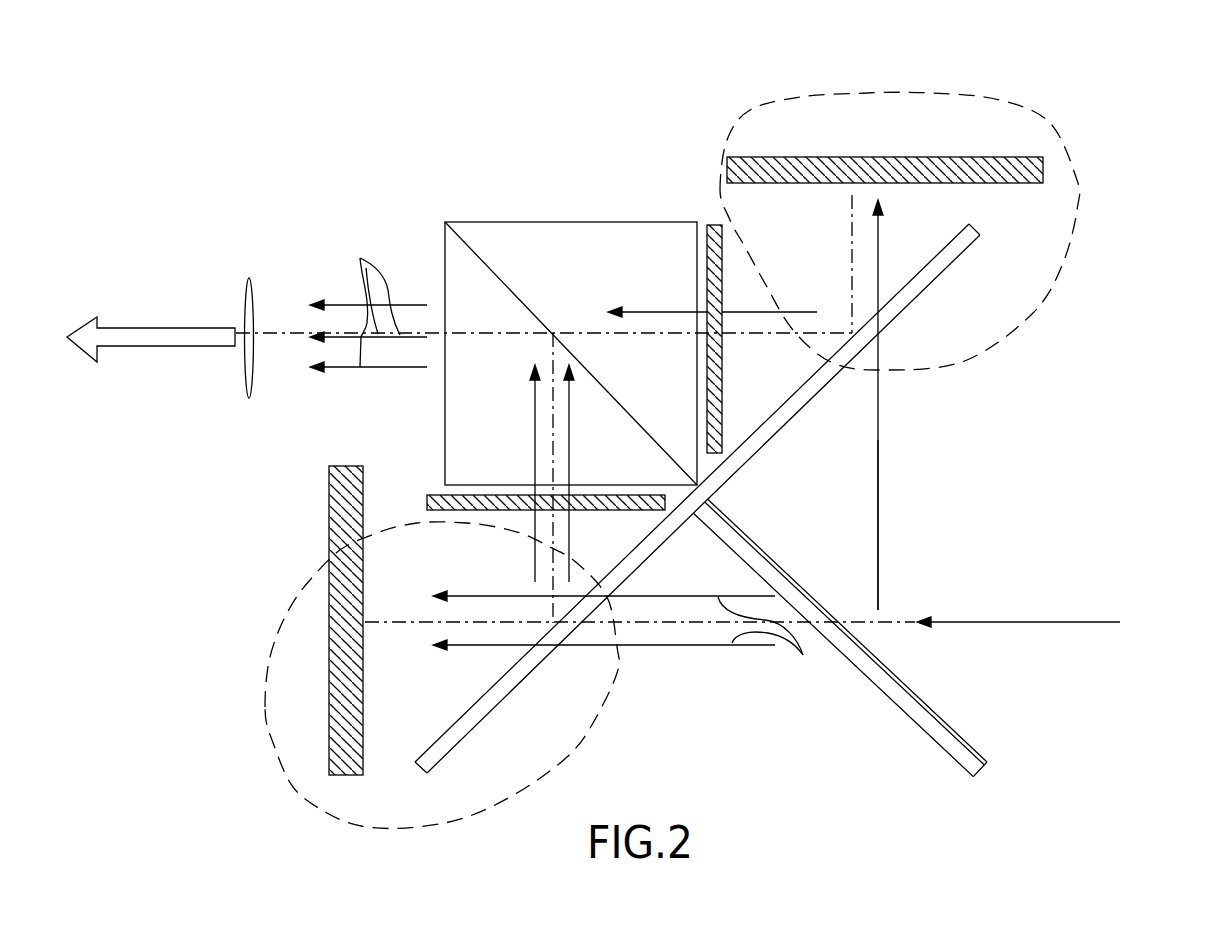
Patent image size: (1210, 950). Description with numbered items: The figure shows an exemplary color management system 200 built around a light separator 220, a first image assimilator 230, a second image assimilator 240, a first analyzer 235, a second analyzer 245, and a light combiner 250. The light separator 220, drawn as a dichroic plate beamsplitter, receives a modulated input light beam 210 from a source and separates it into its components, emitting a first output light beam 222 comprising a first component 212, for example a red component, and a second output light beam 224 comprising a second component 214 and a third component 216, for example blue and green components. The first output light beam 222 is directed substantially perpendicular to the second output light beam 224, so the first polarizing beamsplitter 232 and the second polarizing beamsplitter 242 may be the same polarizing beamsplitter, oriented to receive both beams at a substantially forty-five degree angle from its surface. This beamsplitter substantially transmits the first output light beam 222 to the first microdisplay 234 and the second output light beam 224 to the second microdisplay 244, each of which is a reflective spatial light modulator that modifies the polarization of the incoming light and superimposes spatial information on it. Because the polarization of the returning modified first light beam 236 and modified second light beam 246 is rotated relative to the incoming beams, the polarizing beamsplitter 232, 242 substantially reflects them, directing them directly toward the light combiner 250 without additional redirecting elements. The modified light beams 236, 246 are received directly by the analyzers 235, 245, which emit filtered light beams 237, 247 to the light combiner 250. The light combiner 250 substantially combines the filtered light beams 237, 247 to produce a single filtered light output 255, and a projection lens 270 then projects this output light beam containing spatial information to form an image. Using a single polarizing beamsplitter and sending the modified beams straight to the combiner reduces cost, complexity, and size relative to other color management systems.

The color management system 200 is at (1032, 66).
The light beam 210 is at (1115, 623).
The first component 212 is at (880, 447).
The second component 214 is at (673, 596).
The third component 216 is at (676, 645).
The light separator 220 is at (882, 688).
The first output light beam 222 is at (875, 476).
The second output light beam 224 is at (771, 642).
The first image assimilator 230 is at (1027, 118).
The first polarizing beamsplitter 232 is at (962, 253).
The first microdisplay 234 is at (812, 157).
The first analyzer 235 is at (708, 225).
The modified first light beam 236 is at (792, 312).
The first filtered light beam 237 is at (662, 312).
The second image assimilator 240 is at (283, 779).
The second polarizing beamsplitter 242 is at (470, 735).
The second microdisplay 244 is at (363, 705).
The second analyzer 245 is at (428, 498).
The modified second light beam 246 is at (536, 563).
The second filtered light beam 247 is at (570, 456).
The light combiner 250 is at (520, 298).
The filtered light output 255 is at (372, 299).
The projection lens 270 is at (252, 280).